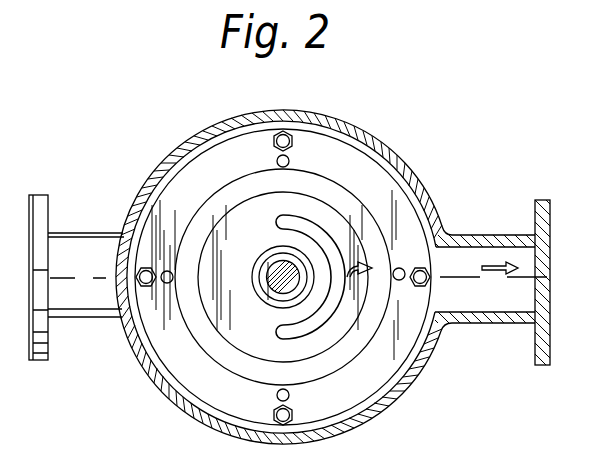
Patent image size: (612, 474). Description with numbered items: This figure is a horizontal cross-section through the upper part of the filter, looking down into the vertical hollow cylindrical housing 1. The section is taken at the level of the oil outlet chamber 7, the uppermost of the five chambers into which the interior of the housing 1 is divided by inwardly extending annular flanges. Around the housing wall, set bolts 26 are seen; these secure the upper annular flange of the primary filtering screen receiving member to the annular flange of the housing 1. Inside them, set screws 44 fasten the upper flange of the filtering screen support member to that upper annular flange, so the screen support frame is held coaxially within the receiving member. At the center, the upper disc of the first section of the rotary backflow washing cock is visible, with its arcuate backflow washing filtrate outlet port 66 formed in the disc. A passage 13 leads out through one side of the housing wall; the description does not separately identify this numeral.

The housing 1 is at (392, 398).
The oil outlet chamber 7 is at (383, 320).
The outlet pipe 13 is at (477, 300).
The set bolts 26 is at (440, 250).
The set screws 44 is at (403, 266).
The backflow washing filtrate outlet port 66 is at (302, 228).